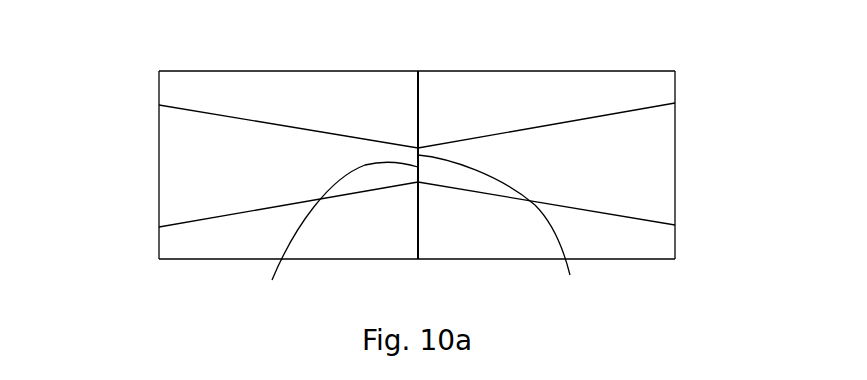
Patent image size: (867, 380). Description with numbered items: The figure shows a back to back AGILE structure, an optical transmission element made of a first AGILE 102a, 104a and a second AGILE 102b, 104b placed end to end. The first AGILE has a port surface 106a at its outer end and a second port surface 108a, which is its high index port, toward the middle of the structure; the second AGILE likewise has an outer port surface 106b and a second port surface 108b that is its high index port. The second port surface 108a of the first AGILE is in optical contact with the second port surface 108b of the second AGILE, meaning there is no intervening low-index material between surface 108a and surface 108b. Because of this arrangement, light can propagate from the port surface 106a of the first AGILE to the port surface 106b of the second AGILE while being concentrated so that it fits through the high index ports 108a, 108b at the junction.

The first AGILE 102a is at (247, 180).
The second AGILE 102b is at (648, 180).
The first AGILE 104a is at (397, 118).
The second AGILE 104b is at (492, 118).
The port surface of the first AGILE 106a is at (159, 148).
The port surface of the second AGILE 106b is at (675, 118).
The second port surface of the first AGILE 108a is at (326, 237).
The second port surface of the second AGILE 108b is at (513, 232).